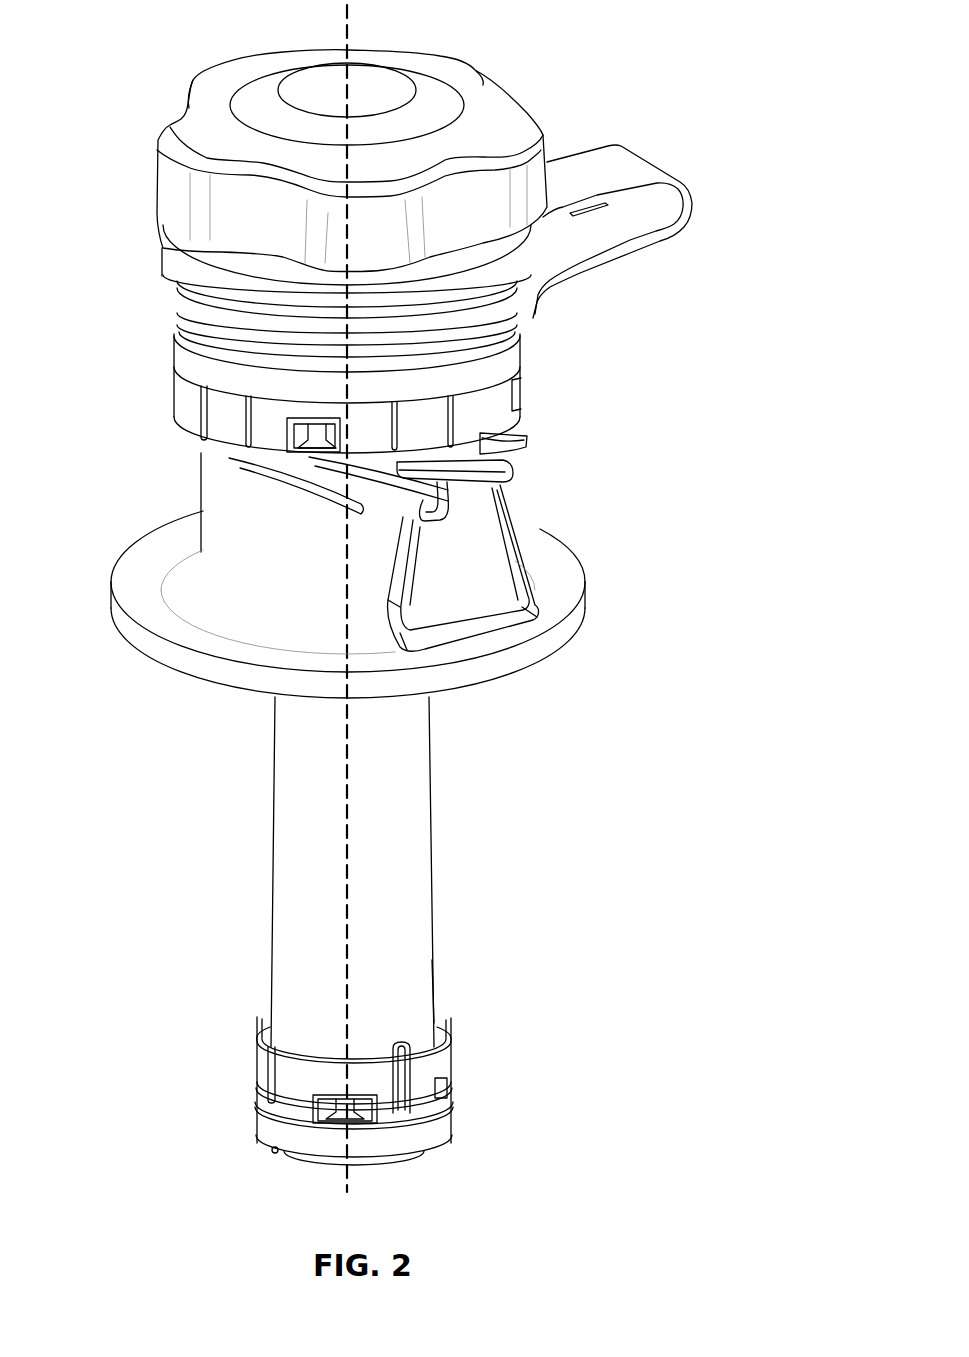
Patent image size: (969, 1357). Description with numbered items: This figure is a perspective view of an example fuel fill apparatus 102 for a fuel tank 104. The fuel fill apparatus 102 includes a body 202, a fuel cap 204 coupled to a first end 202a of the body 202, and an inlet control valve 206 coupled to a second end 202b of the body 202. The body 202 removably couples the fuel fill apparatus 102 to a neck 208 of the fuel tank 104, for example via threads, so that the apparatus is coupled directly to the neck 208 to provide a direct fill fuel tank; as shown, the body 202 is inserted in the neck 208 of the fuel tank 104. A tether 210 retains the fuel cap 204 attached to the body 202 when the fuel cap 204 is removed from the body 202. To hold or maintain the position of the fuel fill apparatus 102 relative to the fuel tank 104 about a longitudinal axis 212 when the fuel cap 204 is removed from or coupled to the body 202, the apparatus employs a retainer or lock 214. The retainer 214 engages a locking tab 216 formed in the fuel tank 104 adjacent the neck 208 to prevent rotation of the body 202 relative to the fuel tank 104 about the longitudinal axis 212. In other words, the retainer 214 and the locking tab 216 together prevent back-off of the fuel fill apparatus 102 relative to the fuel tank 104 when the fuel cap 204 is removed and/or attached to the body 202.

The fuel fill apparatus 102 is at (583, 66).
The fuel tank 104 is at (585, 603).
The body 202 is at (298, 866).
The first end 202a is at (183, 343).
The second end 202b is at (434, 990).
The fuel cap 204 is at (175, 208).
The inlet control valve 206 is at (263, 1076).
The neck 208 is at (220, 503).
The tether 210 is at (620, 258).
The longitudinal axis 212 is at (349, 1192).
The retainer 214 is at (518, 420).
The locking tab 216 is at (482, 532).